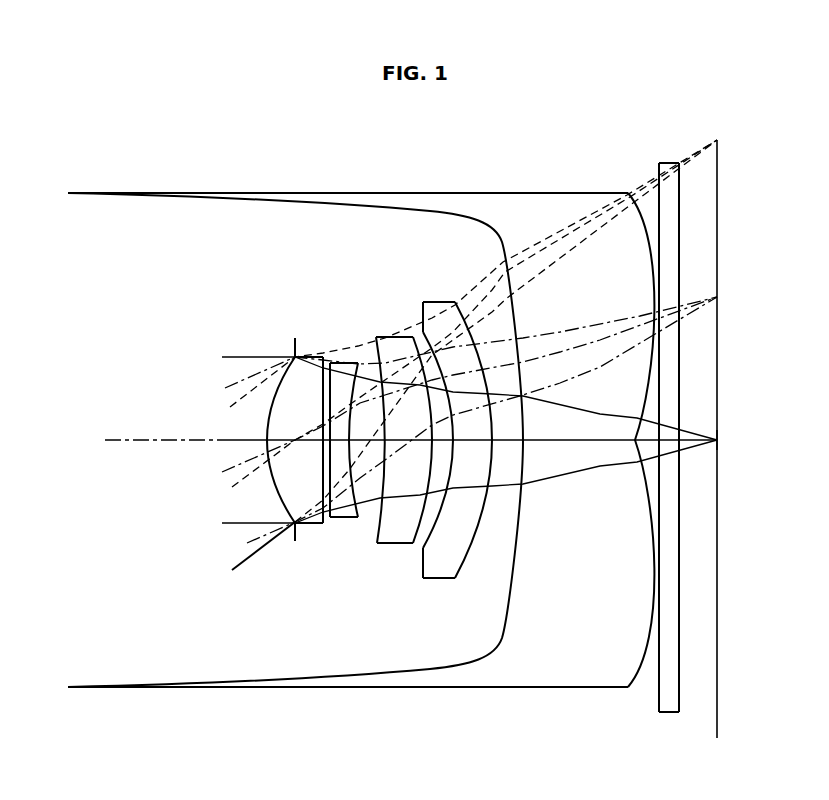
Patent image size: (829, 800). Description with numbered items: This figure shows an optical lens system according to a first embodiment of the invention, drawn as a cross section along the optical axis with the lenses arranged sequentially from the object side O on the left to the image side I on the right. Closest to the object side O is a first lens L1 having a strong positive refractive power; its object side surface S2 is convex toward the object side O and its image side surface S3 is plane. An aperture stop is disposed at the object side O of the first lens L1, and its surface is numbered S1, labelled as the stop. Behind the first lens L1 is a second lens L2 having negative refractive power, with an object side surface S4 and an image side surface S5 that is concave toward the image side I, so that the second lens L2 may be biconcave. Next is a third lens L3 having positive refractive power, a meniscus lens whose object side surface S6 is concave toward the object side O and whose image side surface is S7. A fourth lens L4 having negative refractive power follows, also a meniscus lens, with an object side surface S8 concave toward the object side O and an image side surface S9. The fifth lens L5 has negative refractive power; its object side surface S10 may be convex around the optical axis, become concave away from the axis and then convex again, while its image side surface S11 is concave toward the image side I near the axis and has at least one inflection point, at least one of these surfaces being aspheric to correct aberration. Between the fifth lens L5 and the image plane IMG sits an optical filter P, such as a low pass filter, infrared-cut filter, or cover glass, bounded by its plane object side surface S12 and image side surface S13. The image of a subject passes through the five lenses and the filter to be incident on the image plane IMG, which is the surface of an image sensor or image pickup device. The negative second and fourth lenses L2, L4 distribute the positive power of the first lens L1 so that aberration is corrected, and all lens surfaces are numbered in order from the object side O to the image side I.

The aperture stop surface S1 is at (295, 340).
The object side surface of first lens S2 is at (283, 510).
The image side surface of first lens S3 is at (321, 523).
The object side surface of second lens S4 is at (333, 518).
The image side surface of second lens S5 is at (357, 518).
The object side surface of third lens S6 is at (380, 544).
The image side surface of third lens S7 is at (412, 544).
The object side surface of fourth lens S8 is at (437, 549).
The image side surface of fourth lens S9 is at (463, 565).
The object side surface of fifth lens S10 is at (495, 640).
The image side surface of fifth lens S11 is at (640, 675).
The object side surface of optical filter S12 is at (659, 690).
The image side surface of optical filter S13 is at (680, 690).
The first lens L1 is at (296, 440).
The second lens L2 is at (344, 455).
The third lens L3 is at (396, 447).
The fourth lens L4 is at (455, 439).
The fifth lens L5 is at (361, 448).
The optical filter P is at (674, 445).
The image plane IMG is at (718, 158).
The object side O is at (143, 439).
The image side I is at (733, 438).